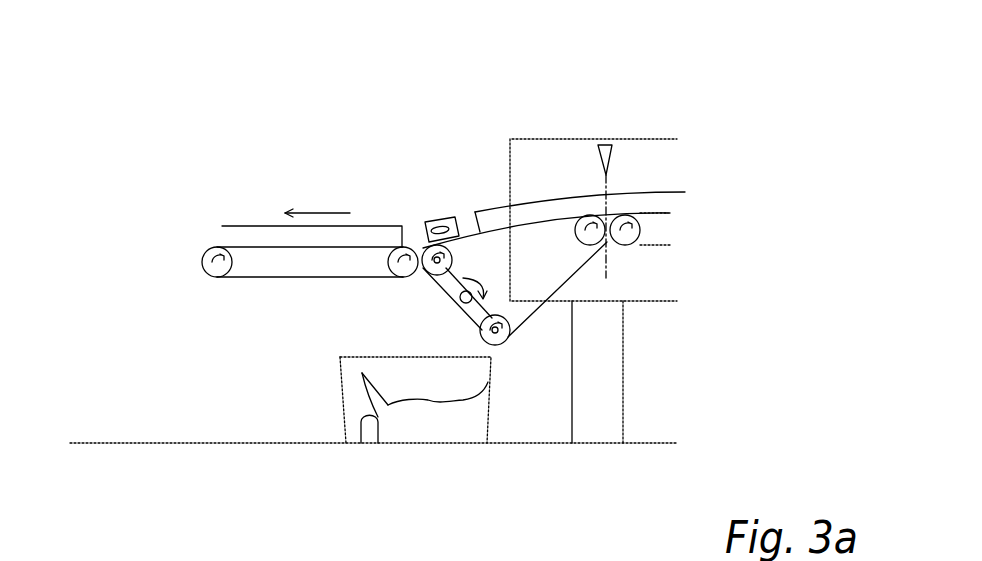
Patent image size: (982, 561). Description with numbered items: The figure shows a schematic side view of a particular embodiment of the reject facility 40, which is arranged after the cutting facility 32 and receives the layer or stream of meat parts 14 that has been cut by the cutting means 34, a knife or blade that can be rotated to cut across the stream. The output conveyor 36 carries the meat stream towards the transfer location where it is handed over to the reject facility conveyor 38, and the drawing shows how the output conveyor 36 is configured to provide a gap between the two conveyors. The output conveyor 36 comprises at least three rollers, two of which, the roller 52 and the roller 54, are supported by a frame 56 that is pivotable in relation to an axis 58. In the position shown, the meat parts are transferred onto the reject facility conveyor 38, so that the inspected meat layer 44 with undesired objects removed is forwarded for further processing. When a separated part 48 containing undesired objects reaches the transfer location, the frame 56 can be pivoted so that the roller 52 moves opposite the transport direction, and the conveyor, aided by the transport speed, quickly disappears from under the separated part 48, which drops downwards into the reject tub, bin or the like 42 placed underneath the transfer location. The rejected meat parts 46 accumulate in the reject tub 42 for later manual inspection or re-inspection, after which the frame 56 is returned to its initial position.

The layer or stream of meat parts 14 is at (670, 192).
The cutting facility 32 is at (537, 122).
The cutting means 34 is at (598, 150).
The output conveyor 36 is at (572, 277).
The reject facility conveyor 38 is at (242, 277).
The reject facility 40 is at (370, 182).
The reject tub, bin or the like 42 is at (343, 397).
The inspected meat layer 44 is at (252, 226).
The rejected meat parts 46 is at (378, 443).
The separated part 48 is at (432, 220).
The roller 52 is at (448, 256).
The roller 54 is at (512, 331).
The frame 56 is at (465, 325).
The axis 58 is at (460, 297).